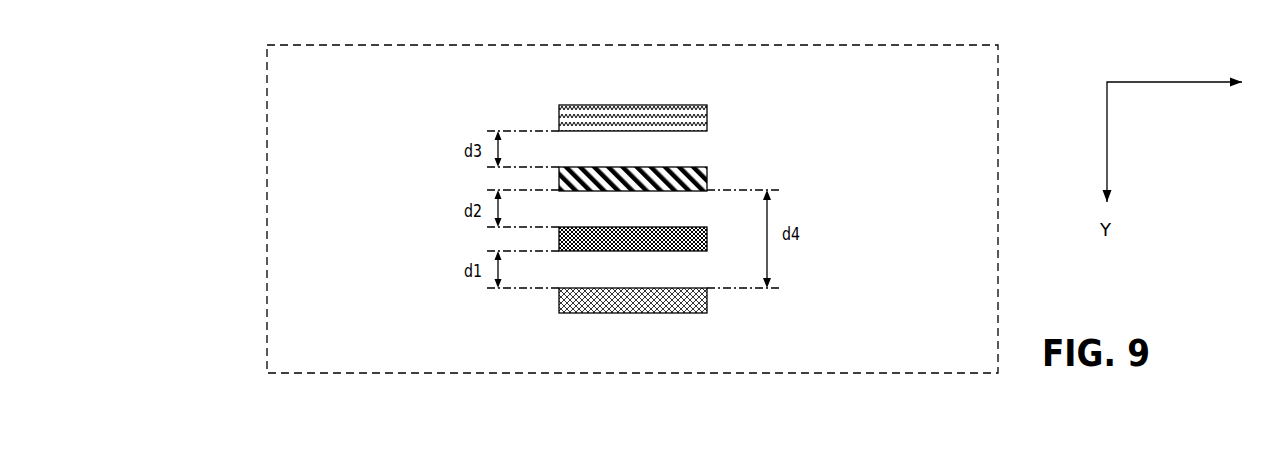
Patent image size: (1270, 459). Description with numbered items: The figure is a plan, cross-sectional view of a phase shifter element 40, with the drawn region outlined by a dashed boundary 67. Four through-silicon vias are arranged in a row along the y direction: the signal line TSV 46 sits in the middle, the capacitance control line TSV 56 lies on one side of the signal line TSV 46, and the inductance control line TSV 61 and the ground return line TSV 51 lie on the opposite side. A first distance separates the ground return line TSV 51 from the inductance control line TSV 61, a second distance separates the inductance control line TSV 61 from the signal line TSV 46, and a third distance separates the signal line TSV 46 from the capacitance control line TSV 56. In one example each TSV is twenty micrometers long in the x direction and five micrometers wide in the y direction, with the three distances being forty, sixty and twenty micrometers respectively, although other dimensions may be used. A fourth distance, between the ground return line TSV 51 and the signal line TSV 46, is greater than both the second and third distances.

The phase shifter element 40 is at (160, 85).
The dashed boundary region 67 is at (266, 185).
The capacitance control line TSV 56 is at (708, 105).
The signal line TSV 46 is at (708, 167).
The inductance control line TSV 61 is at (708, 251).
The ground return line TSV 51 is at (708, 313).